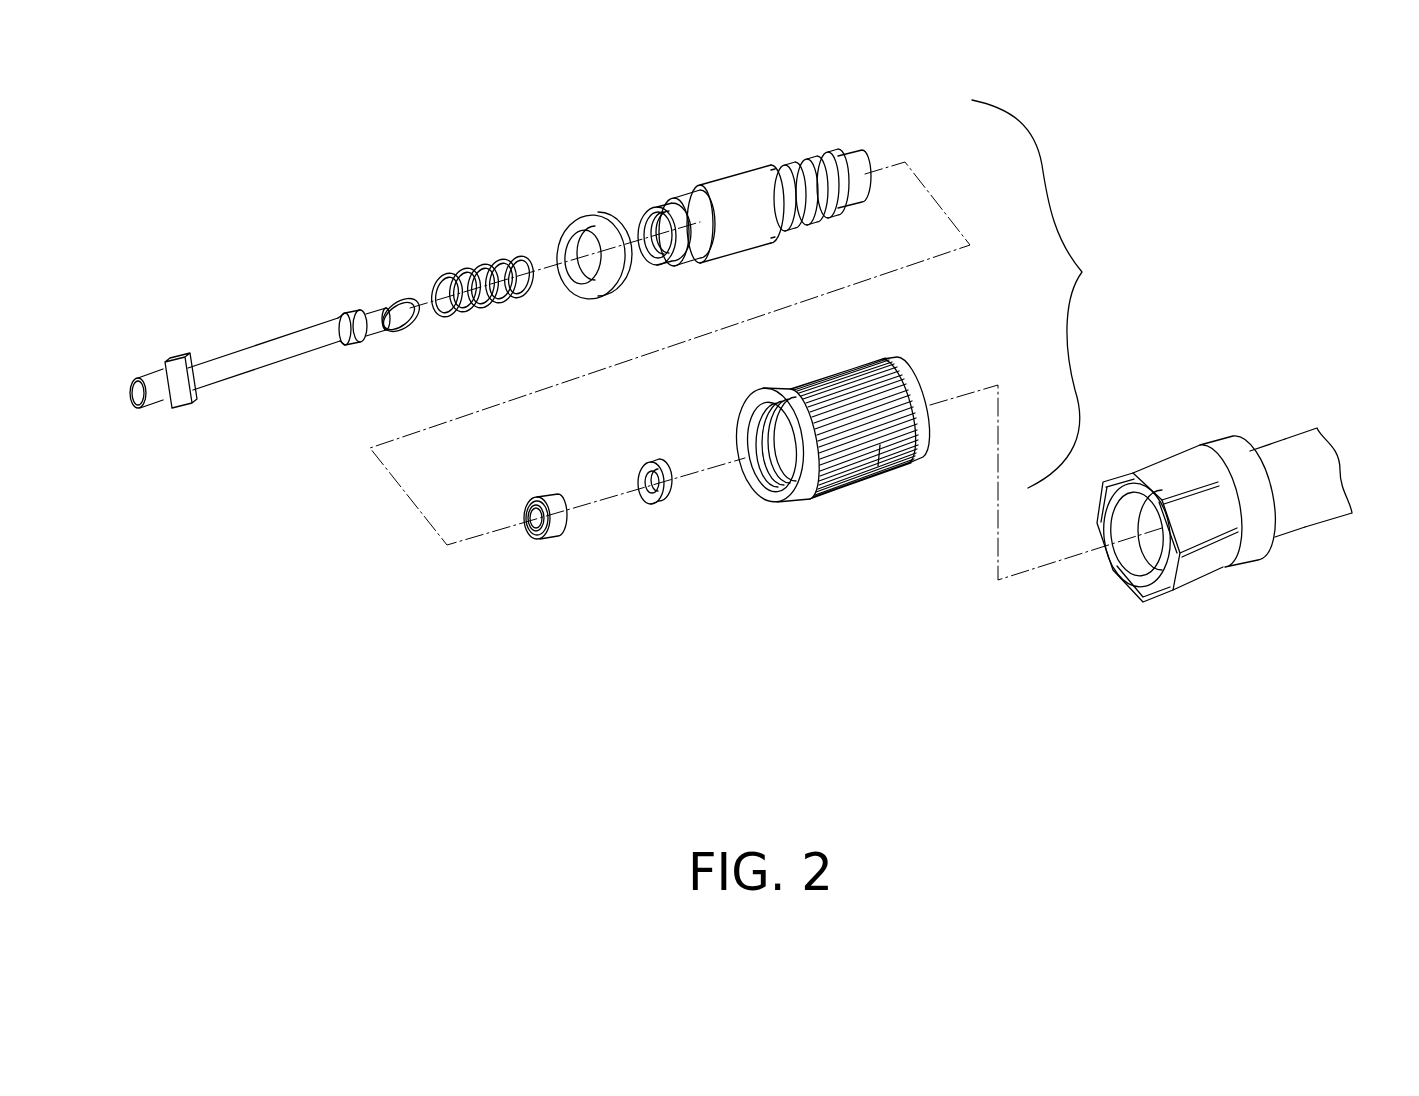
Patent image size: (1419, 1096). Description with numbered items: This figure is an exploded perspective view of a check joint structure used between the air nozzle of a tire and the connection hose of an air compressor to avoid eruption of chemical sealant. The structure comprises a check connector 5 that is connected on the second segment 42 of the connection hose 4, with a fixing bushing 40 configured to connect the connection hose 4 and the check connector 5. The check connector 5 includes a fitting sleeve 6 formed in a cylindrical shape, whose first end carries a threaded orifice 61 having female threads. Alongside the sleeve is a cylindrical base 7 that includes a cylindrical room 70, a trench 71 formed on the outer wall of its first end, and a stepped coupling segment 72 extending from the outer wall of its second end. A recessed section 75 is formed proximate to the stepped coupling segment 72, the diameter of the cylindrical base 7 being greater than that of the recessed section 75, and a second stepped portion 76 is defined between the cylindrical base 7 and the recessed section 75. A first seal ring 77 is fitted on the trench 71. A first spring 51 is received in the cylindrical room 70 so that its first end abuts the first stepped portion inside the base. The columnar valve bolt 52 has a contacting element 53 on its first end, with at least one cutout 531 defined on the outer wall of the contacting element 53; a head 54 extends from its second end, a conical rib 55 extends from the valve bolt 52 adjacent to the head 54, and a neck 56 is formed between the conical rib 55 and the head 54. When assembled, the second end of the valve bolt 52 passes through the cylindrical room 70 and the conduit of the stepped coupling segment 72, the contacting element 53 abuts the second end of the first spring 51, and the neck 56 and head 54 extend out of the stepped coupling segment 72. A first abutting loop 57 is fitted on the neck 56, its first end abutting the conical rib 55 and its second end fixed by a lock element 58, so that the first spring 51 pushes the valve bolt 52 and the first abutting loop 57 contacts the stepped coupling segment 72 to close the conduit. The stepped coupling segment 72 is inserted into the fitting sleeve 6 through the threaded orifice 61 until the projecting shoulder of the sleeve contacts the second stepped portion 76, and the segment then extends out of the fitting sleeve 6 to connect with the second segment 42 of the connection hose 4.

The connection hose 4 is at (1340, 517).
The fixing bushing 40 is at (1212, 565).
The second segment 42 is at (1290, 510).
The check connector 5 is at (1040, 294).
The first spring 51 is at (467, 272).
The valve bolt 52 is at (262, 350).
The contacting element 53 is at (157, 376).
The cutout 531 is at (188, 404).
The head 54 is at (406, 308).
The conical rib 55 is at (348, 320).
The neck 56 is at (369, 315).
The first abutting loop 57 is at (538, 539).
The lock element 58 is at (670, 500).
The fitting sleeve 6 is at (877, 453).
The threaded orifice 61 is at (770, 470).
The cylindrical base 7 is at (710, 193).
The cylindrical room 70 is at (647, 232).
The trench 71 is at (670, 205).
The stepped coupling segment 72 is at (831, 155).
The recessed section 75 is at (771, 167).
The second stepped portion 76 is at (763, 170).
The first seal ring 77 is at (593, 222).